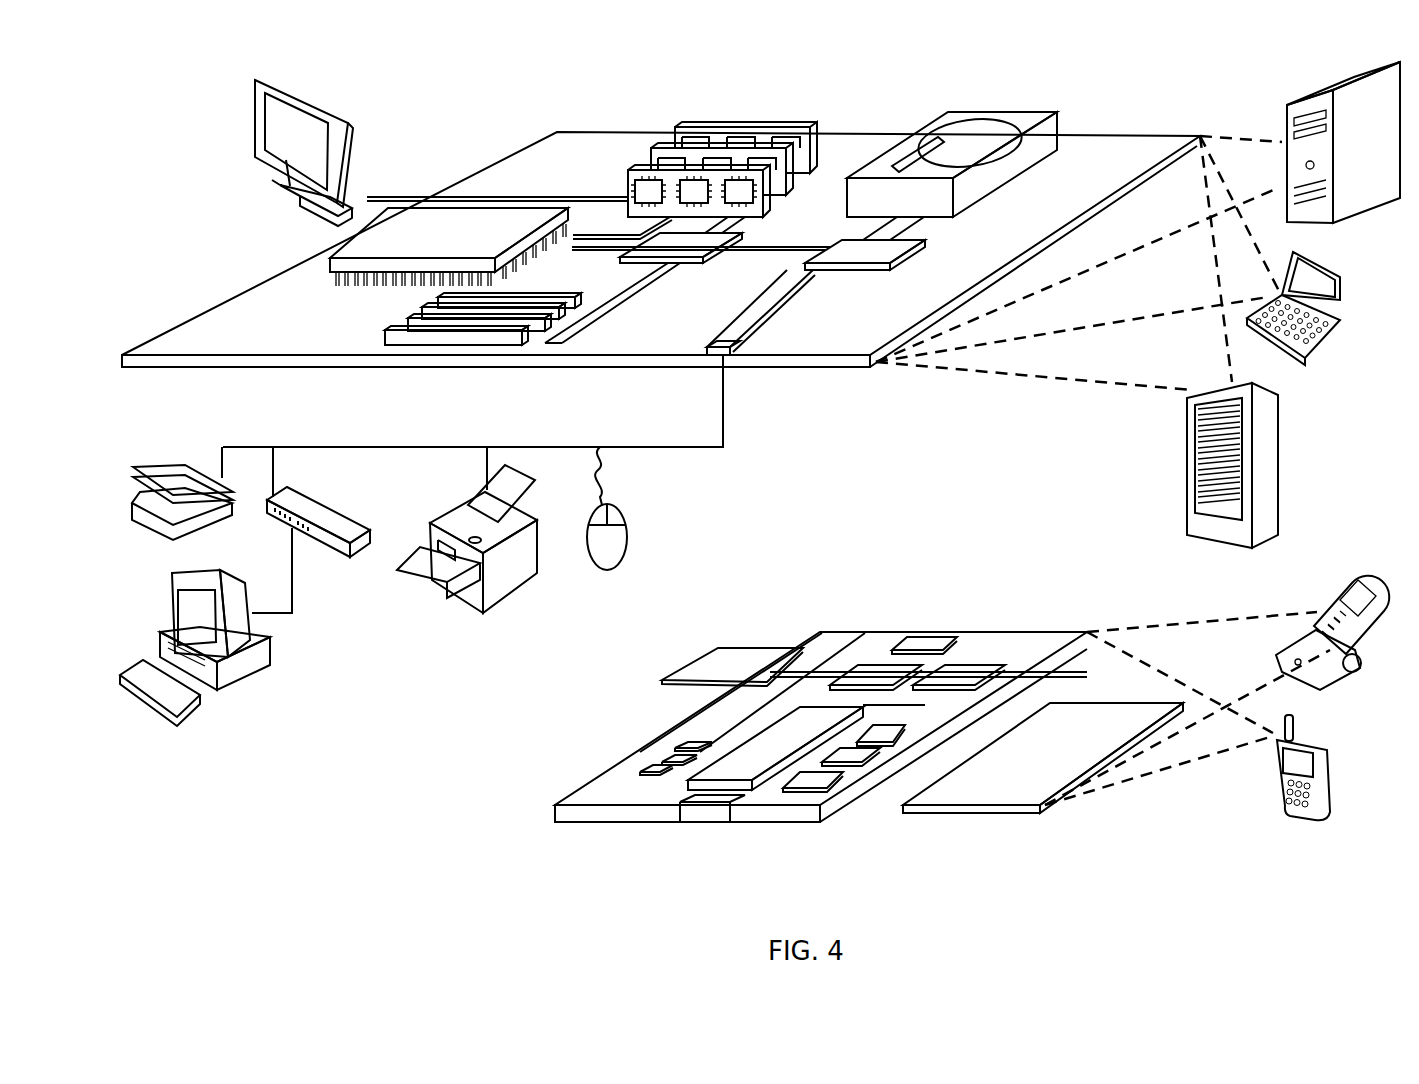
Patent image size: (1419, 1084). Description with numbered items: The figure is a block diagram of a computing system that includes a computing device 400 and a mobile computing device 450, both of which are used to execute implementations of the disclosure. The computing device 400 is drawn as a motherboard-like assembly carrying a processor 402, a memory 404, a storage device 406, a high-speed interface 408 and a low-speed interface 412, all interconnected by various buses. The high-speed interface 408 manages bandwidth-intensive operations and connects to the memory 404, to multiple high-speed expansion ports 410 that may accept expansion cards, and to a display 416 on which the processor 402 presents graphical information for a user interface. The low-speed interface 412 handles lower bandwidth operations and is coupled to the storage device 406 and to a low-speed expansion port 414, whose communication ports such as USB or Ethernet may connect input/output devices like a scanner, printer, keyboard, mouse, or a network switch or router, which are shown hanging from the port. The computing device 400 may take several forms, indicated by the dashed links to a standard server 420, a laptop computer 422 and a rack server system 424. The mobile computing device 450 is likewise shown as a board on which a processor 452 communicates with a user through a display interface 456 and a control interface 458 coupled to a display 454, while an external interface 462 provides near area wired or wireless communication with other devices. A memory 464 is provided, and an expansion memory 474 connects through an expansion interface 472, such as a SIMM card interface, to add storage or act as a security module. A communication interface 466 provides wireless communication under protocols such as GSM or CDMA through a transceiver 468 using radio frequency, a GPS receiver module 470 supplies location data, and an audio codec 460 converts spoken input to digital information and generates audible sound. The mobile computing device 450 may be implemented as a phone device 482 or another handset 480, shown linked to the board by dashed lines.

The computing device 400 is at (466, 100).
The processor 402 is at (336, 265).
The memory 404 is at (692, 130).
The storage device 406 is at (933, 120).
The high-speed interface 408 is at (657, 247).
The high-speed expansion ports 410 is at (410, 331).
The low-speed interface 412 is at (836, 250).
The low-speed expansion port 414 is at (737, 357).
The display 416 is at (257, 80).
The standard server 420 is at (1290, 122).
The laptop computer 422 is at (1348, 282).
The rack server system 424 is at (1188, 492).
The mobile computing device 450 is at (527, 820).
The processor 452 is at (748, 777).
The display 454 is at (1005, 792).
The display interface 456 is at (817, 790).
The control interface 458 is at (853, 765).
The audio codec 460 is at (888, 745).
The external interface 462 is at (710, 805).
The memory 464 is at (660, 767).
The communication interface 466 is at (876, 670).
The transceiver 468 is at (963, 667).
The GPS receiver module 470 is at (934, 640).
The expansion interface 472 is at (800, 645).
The expansion memory 474 is at (718, 650).
The cellular phone 480 is at (1342, 594).
The phone device 482 is at (1275, 775).